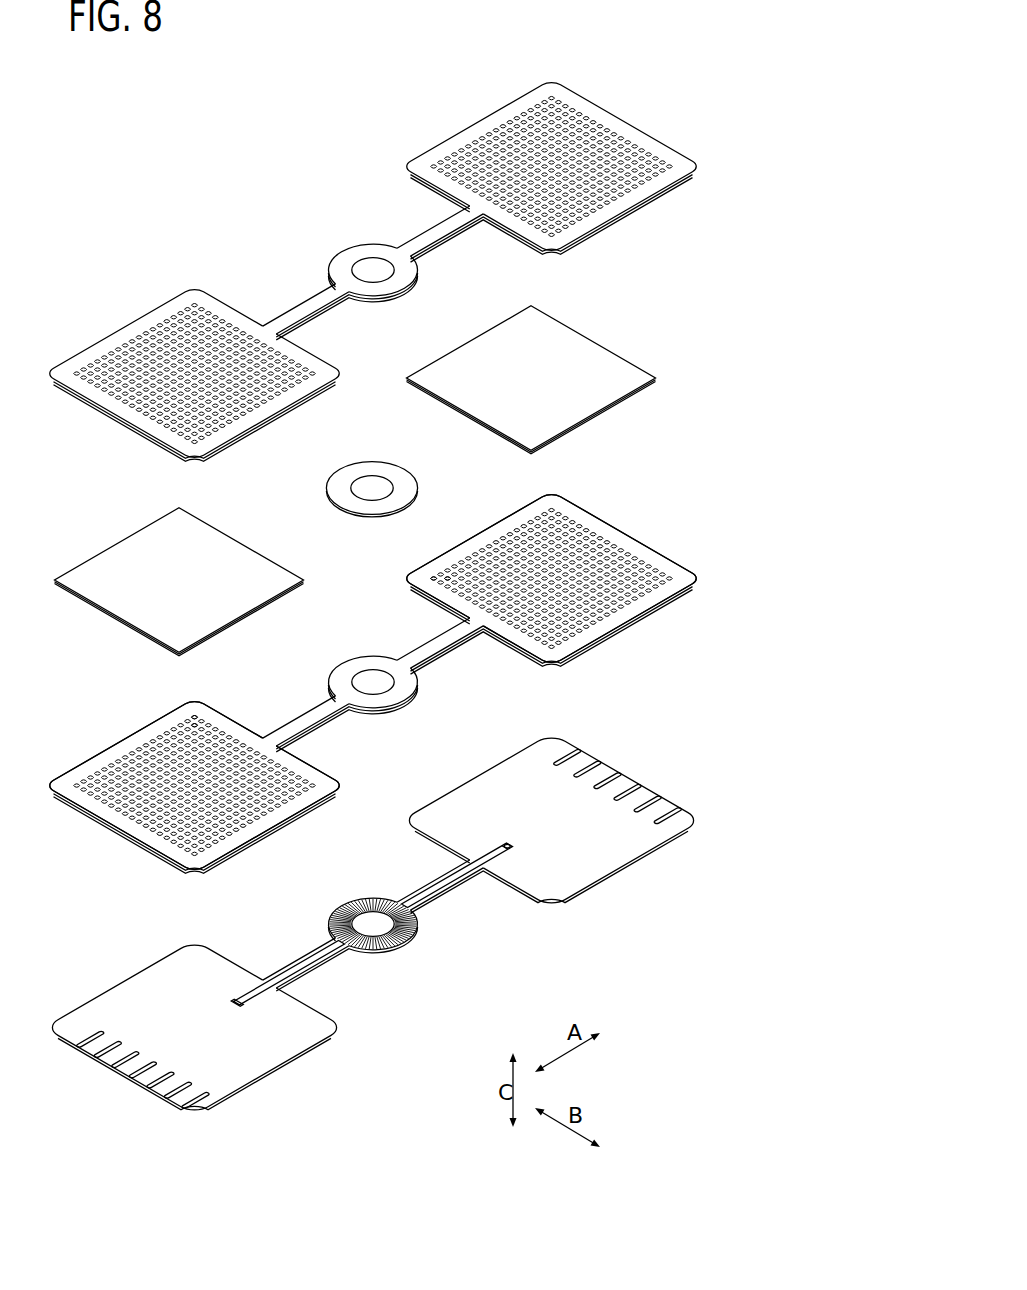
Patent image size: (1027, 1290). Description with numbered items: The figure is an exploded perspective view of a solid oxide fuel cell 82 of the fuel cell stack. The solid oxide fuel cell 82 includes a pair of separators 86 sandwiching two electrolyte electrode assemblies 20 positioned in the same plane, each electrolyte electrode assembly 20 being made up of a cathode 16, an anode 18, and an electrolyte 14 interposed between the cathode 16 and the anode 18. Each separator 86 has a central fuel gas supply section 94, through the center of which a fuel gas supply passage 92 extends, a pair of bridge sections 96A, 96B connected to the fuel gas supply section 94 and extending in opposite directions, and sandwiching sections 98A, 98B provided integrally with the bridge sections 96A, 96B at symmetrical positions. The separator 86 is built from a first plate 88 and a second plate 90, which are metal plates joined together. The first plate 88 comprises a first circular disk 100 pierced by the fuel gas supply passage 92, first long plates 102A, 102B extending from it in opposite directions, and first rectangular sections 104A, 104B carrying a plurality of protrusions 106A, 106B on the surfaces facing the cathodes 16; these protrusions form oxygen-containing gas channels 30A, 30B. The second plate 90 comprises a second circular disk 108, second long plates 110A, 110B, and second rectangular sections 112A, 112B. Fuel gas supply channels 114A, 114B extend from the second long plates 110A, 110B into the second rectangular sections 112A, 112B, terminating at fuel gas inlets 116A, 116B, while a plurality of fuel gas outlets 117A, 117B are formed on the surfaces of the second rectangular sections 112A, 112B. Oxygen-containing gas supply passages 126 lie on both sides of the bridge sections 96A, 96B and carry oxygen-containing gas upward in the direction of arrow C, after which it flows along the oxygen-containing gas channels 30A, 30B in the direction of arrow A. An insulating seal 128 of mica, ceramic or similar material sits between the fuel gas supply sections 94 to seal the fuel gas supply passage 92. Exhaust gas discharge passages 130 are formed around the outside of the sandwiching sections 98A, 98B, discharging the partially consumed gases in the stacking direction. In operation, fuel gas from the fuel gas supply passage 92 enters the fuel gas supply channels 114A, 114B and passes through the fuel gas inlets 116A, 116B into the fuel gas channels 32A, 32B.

The solid oxide fuel cell 82 is at (349, 58).
The separator 86 is at (120, 320).
The first plate 88 is at (650, 618).
The second plate 90 is at (613, 753).
The fuel gas supply passage 92 is at (372, 270).
The fuel gas supply section 94 is at (338, 262).
The bridge section 96A is at (423, 253).
The bridge section 96B is at (307, 307).
The sandwiching section 98A is at (432, 148).
The sandwiching section 98B is at (199, 283).
The first circular disk 100 is at (342, 672).
The first long plate 102A is at (423, 652).
The first long plate 102B is at (308, 712).
The first rectangular section 104A is at (572, 507).
The first rectangular section 104B is at (60, 792).
The protrusions 106A is at (445, 572).
The protrusions 106B is at (93, 773).
The second circular disk 108 is at (345, 900).
The second long plate 110A is at (407, 888).
The second long plate 110B is at (300, 945).
The second rectangular section 112A is at (590, 867).
The second rectangular section 112B is at (132, 998).
The fuel gas supply channel 114A is at (425, 900).
The fuel gas supply channel 114B is at (283, 977).
The fuel gas inlet 116A is at (508, 838).
The fuel gas inlet 116B is at (230, 1006).
The fuel gas outlets 117A is at (690, 797).
The fuel gas outlets 117B is at (137, 1098).
The oxygen-containing gas supply passages 126 is at (402, 236).
The insulating seal 128 is at (350, 472).
The exhaust gas discharge passages 130 is at (655, 528).
The electrolyte electrode assembly 20 is at (607, 333).
The anode 18 is at (120, 598).
The electrolyte 14 is at (122, 637).
The cathode 16 is at (157, 628).
The oxygen-containing gas channel 30A is at (518, 525).
The oxygen-containing gas channel 30B is at (153, 735).
The fuel gas channel 32A is at (645, 827).
The fuel gas channel 32B is at (272, 1040).